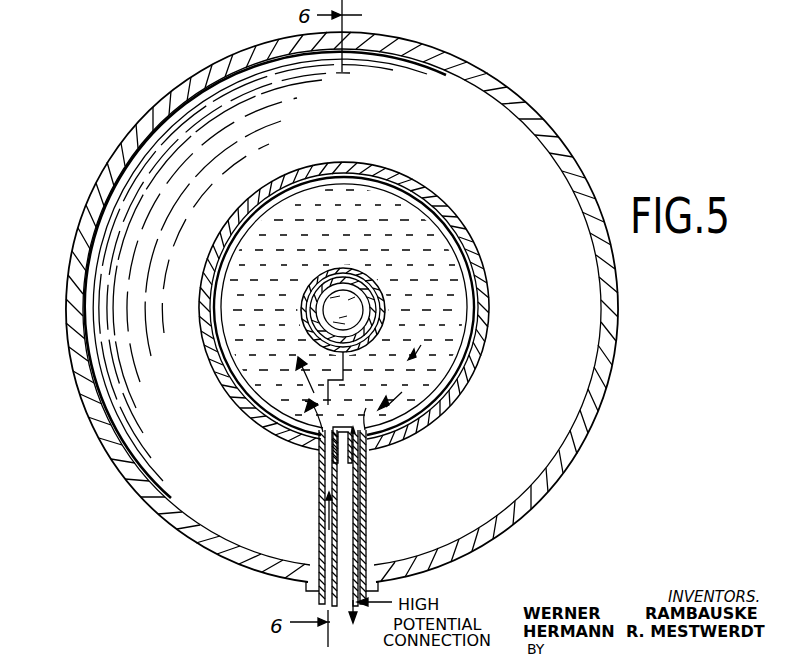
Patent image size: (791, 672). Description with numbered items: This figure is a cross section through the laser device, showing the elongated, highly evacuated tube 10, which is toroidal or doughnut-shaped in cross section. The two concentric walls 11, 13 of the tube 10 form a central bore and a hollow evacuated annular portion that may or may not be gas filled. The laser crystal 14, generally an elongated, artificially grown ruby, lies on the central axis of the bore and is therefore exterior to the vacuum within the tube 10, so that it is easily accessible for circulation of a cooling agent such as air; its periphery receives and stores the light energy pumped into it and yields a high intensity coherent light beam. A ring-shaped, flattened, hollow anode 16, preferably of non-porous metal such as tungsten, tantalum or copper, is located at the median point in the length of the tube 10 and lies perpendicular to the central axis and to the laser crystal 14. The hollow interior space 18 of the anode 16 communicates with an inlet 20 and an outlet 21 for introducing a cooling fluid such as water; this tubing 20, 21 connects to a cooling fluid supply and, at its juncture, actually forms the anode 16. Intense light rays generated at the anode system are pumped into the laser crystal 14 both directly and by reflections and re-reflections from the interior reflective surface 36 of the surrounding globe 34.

The evacuated tube 10 is at (484, 246).
The concentric wall 11 is at (370, 304).
The concentric wall 13 is at (237, 408).
The laser crystal 14 is at (343, 298).
The anode 16 is at (387, 304).
The hollow interior space 18 is at (244, 320).
The inlet 20 is at (322, 536).
The outlet 21 is at (357, 536).
The globe 34 is at (505, 96).
The interior reflective surface 36 is at (444, 72).